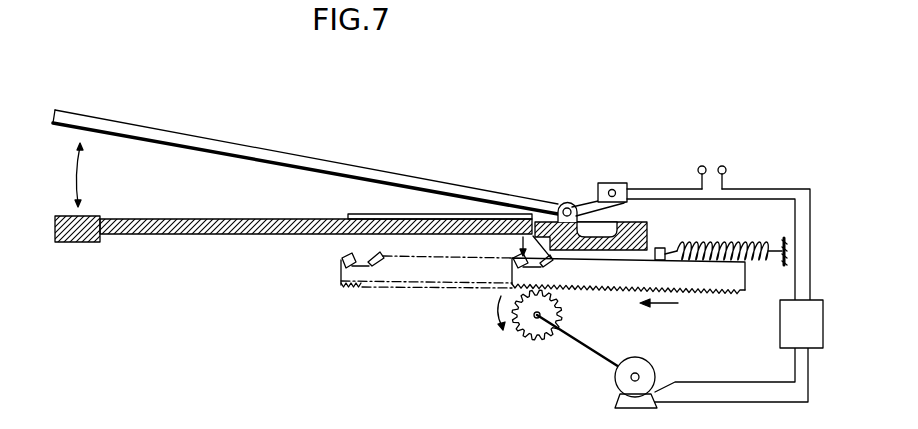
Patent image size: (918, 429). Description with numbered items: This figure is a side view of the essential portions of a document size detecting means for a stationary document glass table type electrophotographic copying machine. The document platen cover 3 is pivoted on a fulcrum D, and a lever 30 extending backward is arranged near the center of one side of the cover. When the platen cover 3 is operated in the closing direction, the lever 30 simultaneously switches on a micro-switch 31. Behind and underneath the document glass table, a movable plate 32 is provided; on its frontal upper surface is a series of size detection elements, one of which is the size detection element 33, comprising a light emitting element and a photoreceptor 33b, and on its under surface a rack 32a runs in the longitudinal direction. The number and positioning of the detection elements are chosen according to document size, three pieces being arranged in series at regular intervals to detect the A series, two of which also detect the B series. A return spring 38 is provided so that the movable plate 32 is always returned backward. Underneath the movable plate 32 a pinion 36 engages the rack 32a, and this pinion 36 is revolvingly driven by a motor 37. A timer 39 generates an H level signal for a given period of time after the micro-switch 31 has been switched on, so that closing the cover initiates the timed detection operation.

The document platen cover 3 is at (355, 162).
The base plate I is at (222, 219).
The magnet plate M is at (362, 214).
The fulcrum D is at (563, 207).
The lever 30 is at (587, 203).
The micro-switch 31 is at (608, 183).
The return spring 38 is at (687, 246).
The movable plate 32 is at (687, 273).
The rack 32a is at (644, 312).
The size detection element 33 is at (548, 263).
The photoreceptor 33b is at (512, 266).
The pinion 36 is at (533, 330).
The motor 37 is at (622, 378).
The timer 39 is at (795, 327).